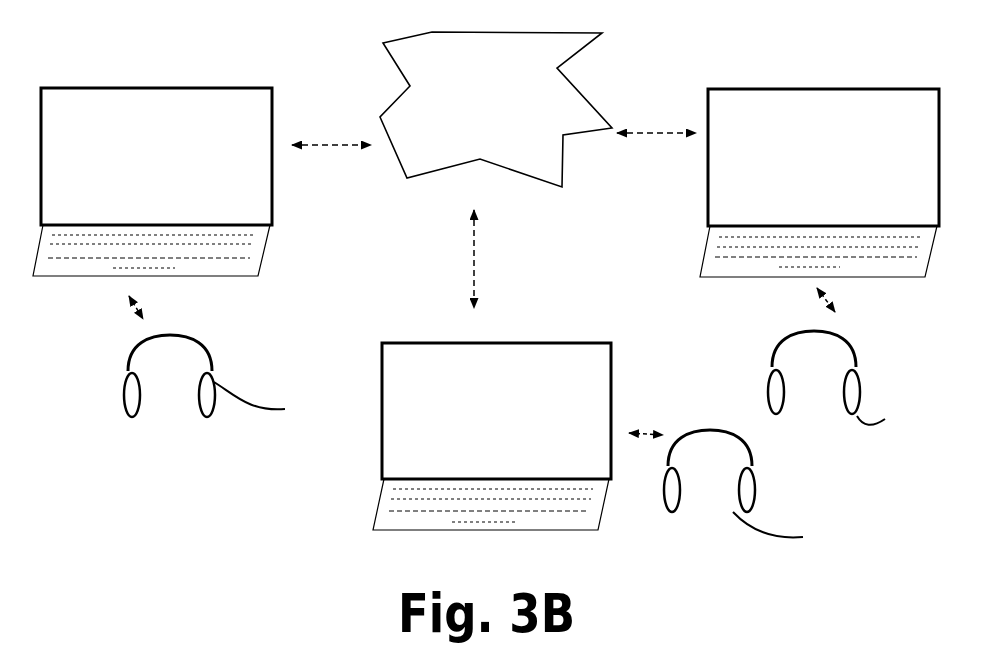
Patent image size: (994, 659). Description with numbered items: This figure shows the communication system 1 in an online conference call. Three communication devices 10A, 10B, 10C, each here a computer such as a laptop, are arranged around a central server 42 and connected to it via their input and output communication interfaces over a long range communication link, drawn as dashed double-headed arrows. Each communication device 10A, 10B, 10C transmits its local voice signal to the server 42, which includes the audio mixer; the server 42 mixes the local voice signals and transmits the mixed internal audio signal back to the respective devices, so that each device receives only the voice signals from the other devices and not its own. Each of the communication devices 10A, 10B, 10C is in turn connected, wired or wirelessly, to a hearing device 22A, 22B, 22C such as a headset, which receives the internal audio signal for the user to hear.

The communication system 1 is at (268, 446).
The communication device 10A is at (193, 88).
The communication device 10B is at (568, 339).
The communication device 10C is at (776, 92).
The hearing device 22A is at (227, 376).
The hearing device 22B is at (758, 483).
The hearing device 22C is at (850, 378).
The server 42 is at (496, 109).